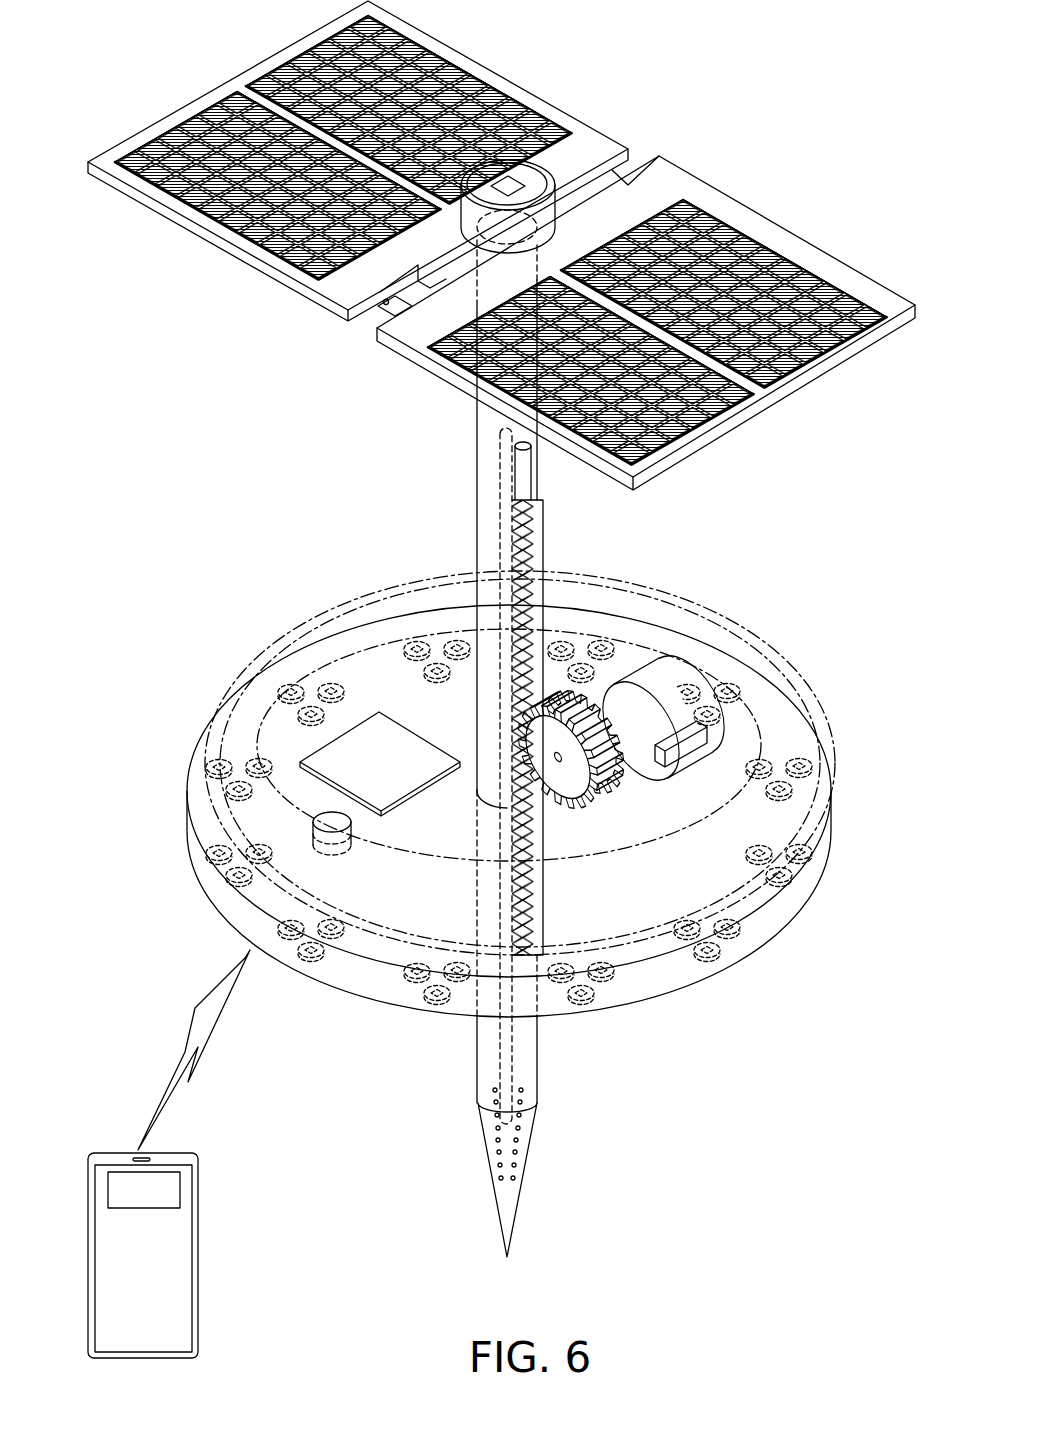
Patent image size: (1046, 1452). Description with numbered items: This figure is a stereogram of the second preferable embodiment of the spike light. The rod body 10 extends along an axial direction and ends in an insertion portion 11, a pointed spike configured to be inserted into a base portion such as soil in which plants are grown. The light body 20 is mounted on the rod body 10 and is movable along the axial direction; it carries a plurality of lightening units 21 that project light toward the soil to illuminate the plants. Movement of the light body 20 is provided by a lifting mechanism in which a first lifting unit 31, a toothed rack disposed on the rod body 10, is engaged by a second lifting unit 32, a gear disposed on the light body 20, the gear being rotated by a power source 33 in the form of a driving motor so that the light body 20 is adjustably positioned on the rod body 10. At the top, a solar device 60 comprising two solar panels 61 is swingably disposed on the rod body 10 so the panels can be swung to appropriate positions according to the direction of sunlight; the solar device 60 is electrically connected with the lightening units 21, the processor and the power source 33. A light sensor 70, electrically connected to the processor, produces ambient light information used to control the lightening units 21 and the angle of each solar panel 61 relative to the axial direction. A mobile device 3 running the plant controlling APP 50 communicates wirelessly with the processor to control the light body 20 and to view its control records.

The mobile device 3 is at (189, 1154).
The rod body 10 is at (487, 452).
The insertion portion 11 is at (530, 1133).
The light body 20 is at (798, 670).
The lightening unit 21 is at (720, 962).
The first lifting unit 31 is at (545, 552).
The second lifting unit 32 is at (590, 700).
The power source 33 is at (682, 665).
The plant controlling APP 50 is at (178, 1190).
The solar device 60 is at (501, 245).
The solar panel 61 is at (760, 137).
The light sensor 70 is at (514, 175).